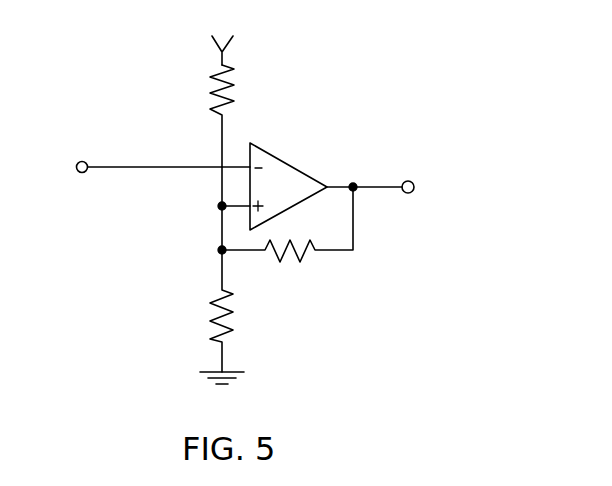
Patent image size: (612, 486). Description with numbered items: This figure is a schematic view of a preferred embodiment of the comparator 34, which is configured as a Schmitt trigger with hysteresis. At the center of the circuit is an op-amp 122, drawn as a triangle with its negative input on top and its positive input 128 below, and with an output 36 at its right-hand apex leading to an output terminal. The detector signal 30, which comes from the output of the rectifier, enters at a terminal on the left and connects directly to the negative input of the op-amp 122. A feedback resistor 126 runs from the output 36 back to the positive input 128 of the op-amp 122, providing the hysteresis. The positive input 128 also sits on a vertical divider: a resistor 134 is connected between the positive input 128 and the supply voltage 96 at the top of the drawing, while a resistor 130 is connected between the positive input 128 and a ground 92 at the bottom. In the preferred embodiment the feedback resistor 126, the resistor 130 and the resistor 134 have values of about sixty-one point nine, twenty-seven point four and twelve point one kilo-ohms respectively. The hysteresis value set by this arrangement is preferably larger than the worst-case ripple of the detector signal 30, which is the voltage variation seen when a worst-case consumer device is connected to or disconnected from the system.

The comparator 34 is at (449, 134).
The supply voltage 96 is at (212, 42).
The resistor 134 is at (210, 90).
The detector signal 30 is at (85, 161).
The positive input 128 is at (218, 207).
The op-amp 122 is at (298, 194).
The output 36 is at (407, 193).
The feedback resistor 126 is at (292, 258).
The resistor 130 is at (213, 318).
The ground 92 is at (220, 357).